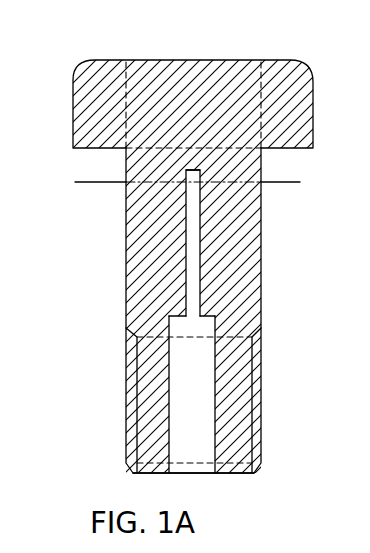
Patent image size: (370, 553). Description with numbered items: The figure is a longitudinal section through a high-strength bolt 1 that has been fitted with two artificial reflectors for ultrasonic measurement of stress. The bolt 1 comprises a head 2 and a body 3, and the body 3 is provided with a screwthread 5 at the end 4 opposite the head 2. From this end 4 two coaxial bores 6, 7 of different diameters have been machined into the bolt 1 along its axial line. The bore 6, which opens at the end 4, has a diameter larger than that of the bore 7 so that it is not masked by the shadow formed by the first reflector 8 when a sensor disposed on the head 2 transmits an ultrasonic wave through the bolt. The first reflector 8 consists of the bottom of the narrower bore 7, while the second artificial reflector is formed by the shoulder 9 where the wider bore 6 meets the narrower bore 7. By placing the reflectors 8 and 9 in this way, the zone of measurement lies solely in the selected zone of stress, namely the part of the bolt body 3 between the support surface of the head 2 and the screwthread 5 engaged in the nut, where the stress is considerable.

The high-strength bolt 1 is at (213, 84).
The head 2 is at (88, 90).
The body 3 is at (148, 262).
The end 4 is at (232, 473).
The screwthread 5 is at (137, 414).
The bore 6 is at (214, 387).
The bore 7 is at (202, 258).
The first reflector 8 is at (200, 169).
The shoulder 9 is at (213, 305).